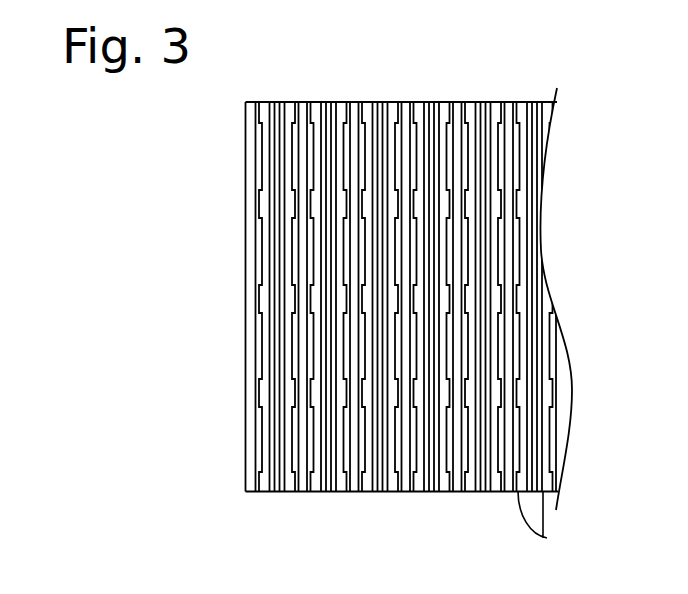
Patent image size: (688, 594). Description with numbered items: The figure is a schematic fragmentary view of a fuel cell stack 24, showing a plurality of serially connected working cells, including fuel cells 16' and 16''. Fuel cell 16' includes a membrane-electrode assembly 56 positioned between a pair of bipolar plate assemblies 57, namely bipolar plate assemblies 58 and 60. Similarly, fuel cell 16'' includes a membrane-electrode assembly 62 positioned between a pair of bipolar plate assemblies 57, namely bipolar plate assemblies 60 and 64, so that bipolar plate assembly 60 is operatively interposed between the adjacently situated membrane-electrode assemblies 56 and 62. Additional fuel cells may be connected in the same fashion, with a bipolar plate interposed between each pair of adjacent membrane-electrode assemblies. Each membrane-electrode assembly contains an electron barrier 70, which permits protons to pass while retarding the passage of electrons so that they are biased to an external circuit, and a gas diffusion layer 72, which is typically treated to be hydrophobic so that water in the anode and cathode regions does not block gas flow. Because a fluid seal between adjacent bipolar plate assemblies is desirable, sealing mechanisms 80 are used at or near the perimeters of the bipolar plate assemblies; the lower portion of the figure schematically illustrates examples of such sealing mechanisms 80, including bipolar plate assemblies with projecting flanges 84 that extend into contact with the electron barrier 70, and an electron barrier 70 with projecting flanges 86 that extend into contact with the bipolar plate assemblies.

The fuel cell stack 24 is at (194, 247).
The membrane-electrode assembly 56 is at (276, 95).
The bipolar plate assembly 58 is at (245, 108).
The bipolar plate assembly 60 is at (302, 102).
The membrane-electrode assembly 62 is at (333, 95).
The bipolar plate assembly 64 is at (362, 101).
The electron barrier 70 is at (483, 96).
The gas diffusion layer 72 is at (550, 84).
The bipolar plate assemblies 57 is at (344, 399).
The fuel cell 16' is at (290, 292).
The fuel cell 16'' is at (344, 297).
The projecting flanges 84 is at (424, 492).
The sealing mechanisms 80 is at (507, 504).
The projecting flanges 86 is at (547, 538).